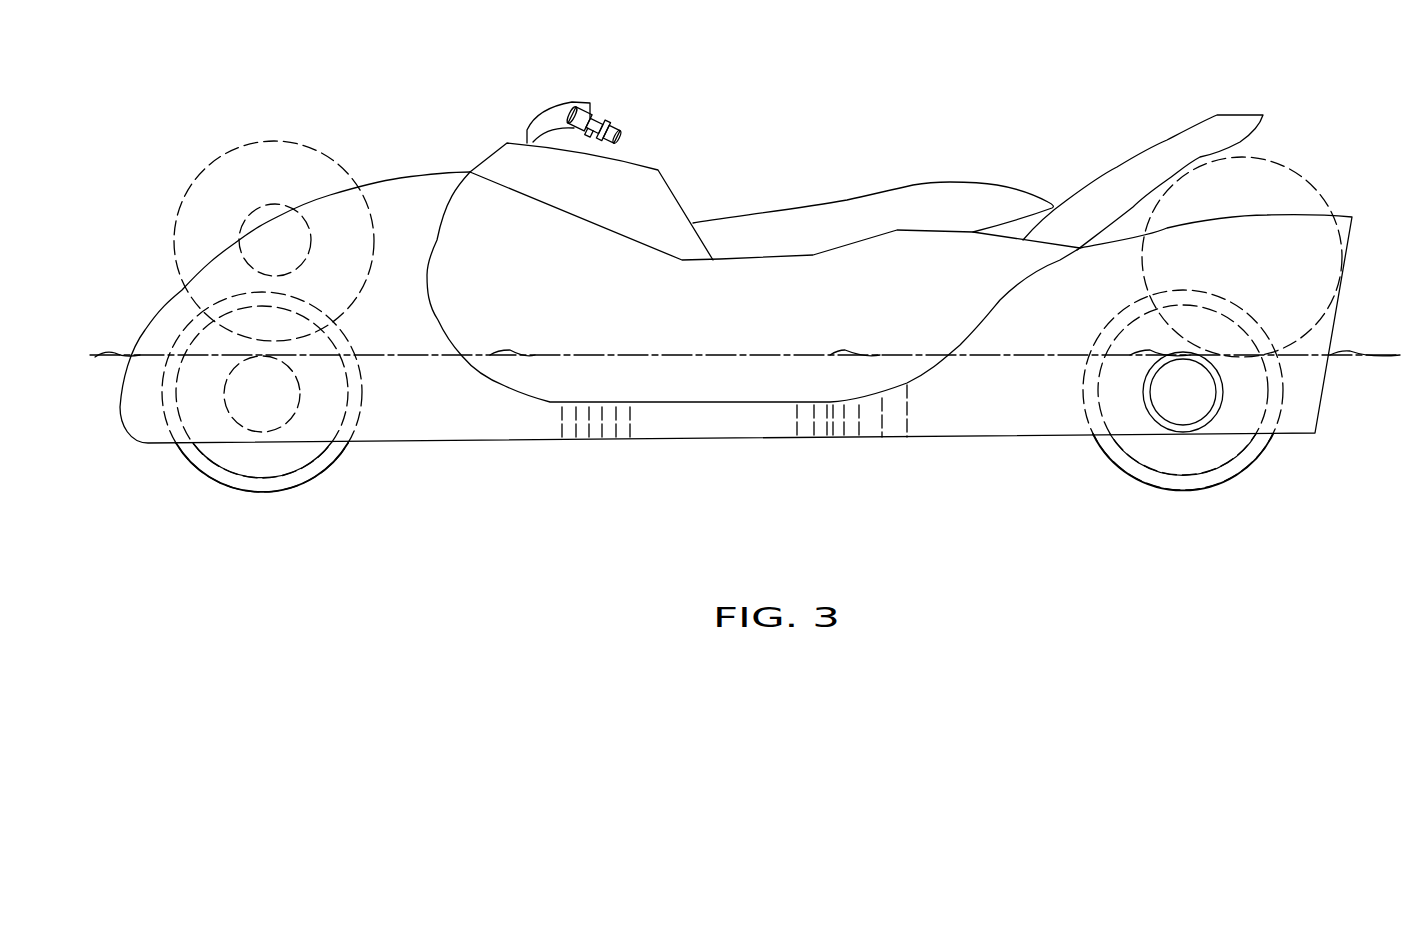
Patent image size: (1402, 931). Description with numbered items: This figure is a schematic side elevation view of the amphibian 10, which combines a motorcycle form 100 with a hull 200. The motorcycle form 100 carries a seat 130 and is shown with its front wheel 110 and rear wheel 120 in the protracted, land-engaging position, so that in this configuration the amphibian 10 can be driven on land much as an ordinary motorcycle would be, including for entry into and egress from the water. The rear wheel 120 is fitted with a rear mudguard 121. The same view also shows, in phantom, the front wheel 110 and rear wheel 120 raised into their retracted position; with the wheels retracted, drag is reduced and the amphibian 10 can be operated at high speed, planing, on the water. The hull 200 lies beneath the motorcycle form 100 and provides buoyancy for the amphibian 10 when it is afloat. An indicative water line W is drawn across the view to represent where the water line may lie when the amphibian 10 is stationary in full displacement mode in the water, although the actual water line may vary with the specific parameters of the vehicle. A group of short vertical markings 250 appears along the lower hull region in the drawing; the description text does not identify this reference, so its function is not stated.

The amphibian 10 is at (820, 139).
The motorcycle form 100 is at (674, 182).
The front wheel 110 is at (331, 462).
The rear wheel 120 is at (1183, 492).
The rear mudguard 121 is at (1113, 177).
The seat 130 is at (847, 203).
The hull 200 is at (769, 383).
The vents / intake louvers 250 is at (558, 443).
The water line W is at (690, 356).